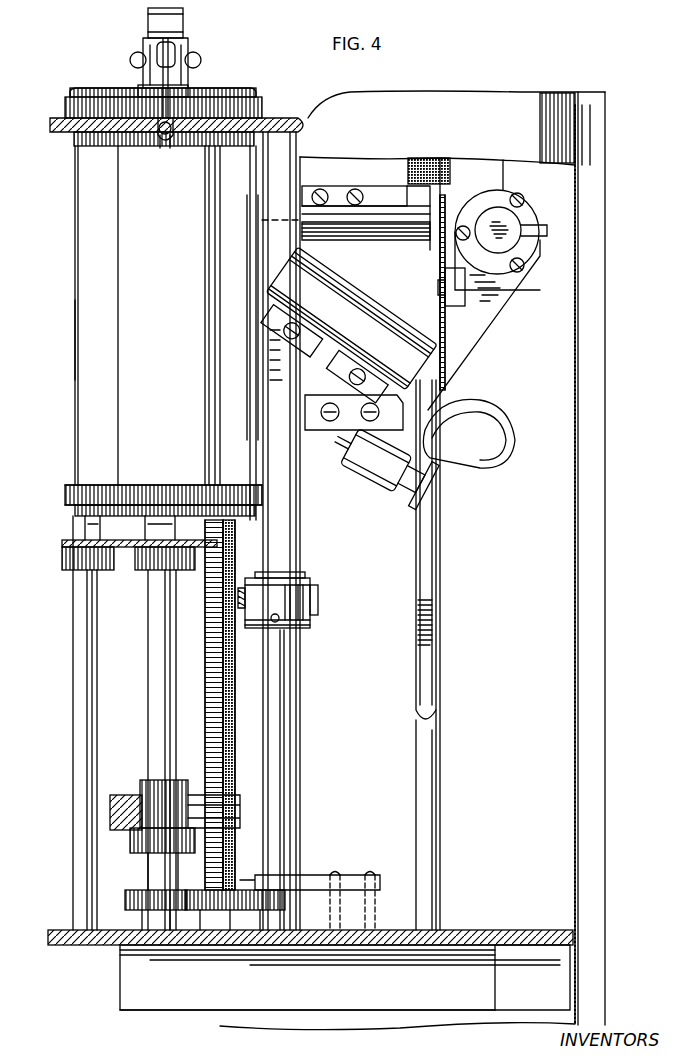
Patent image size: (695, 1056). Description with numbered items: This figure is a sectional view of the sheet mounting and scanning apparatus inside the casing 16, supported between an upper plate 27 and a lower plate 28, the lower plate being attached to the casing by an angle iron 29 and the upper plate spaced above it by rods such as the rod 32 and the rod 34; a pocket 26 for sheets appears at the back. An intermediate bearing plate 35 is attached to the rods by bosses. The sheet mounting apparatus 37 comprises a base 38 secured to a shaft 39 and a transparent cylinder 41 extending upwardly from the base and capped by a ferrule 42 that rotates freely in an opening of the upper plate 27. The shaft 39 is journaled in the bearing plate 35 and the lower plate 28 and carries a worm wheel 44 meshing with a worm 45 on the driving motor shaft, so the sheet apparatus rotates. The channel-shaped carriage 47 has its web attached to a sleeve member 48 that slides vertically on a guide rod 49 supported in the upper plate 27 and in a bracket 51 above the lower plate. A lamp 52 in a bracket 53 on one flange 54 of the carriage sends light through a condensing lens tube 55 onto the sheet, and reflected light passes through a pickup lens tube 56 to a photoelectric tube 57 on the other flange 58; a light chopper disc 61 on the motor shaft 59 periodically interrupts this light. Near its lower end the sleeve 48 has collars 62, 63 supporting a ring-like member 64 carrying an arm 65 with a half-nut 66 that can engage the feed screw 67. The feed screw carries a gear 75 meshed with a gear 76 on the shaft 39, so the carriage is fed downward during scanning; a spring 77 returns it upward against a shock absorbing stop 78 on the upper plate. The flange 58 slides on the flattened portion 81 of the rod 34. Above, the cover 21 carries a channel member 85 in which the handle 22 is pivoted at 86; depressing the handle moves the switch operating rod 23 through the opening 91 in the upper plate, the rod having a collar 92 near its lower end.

The cover or casing 16 is at (443, 96).
The cover 21 is at (240, 100).
The handle 22 is at (150, 22).
The handle rod or switch operating member 23 is at (172, 100).
The pocket 26 is at (603, 140).
The upper plate 27 is at (287, 118).
The lower plate 28 is at (466, 932).
The angle iron 29 is at (194, 1012).
The rod 32 is at (75, 676).
The rod 34 is at (442, 736).
The intermediate bearing plate 35 is at (75, 548).
The sheet mounting apparatus 37 is at (76, 340).
The base 38 is at (70, 490).
The shaft 39 is at (150, 640).
The transparent hollow cylindrical or tubular section 41 is at (85, 222).
The ferrule 42 is at (140, 148).
The worm wheel 44 is at (128, 796).
The worm 45 is at (145, 782).
The carriage 47 is at (495, 344).
The elongated sleeve member 48 is at (300, 540).
The guide rod 49 is at (292, 680).
The bracket 51 is at (352, 872).
The lamp 52 is at (512, 446).
The bracket 53 is at (395, 436).
The flange 54 is at (413, 195).
The condensing lens tube 55 is at (333, 274).
The pickup lens tube 56 is at (392, 215).
The photoelectric tube 57 is at (517, 225).
The flange 58 is at (520, 290).
The shaft 59 is at (443, 280).
The light chopper disc 61 is at (445, 326).
The collar 62 is at (305, 584).
The collar 63 is at (310, 620).
The ring-like member 64 is at (285, 580).
The arm 65 is at (318, 600).
The half-nut 66 is at (255, 620).
The feed screw 67 is at (206, 640).
The gear 75 is at (255, 906).
The gear 76 is at (155, 892).
The spring 77 is at (282, 338).
The shock absorbing stop 78 is at (437, 160).
The flattened portion 81 is at (432, 582).
The channel member 85 is at (185, 48).
The pivot 86 is at (190, 62).
The opening 91 is at (182, 137).
The collar 92 is at (160, 136).